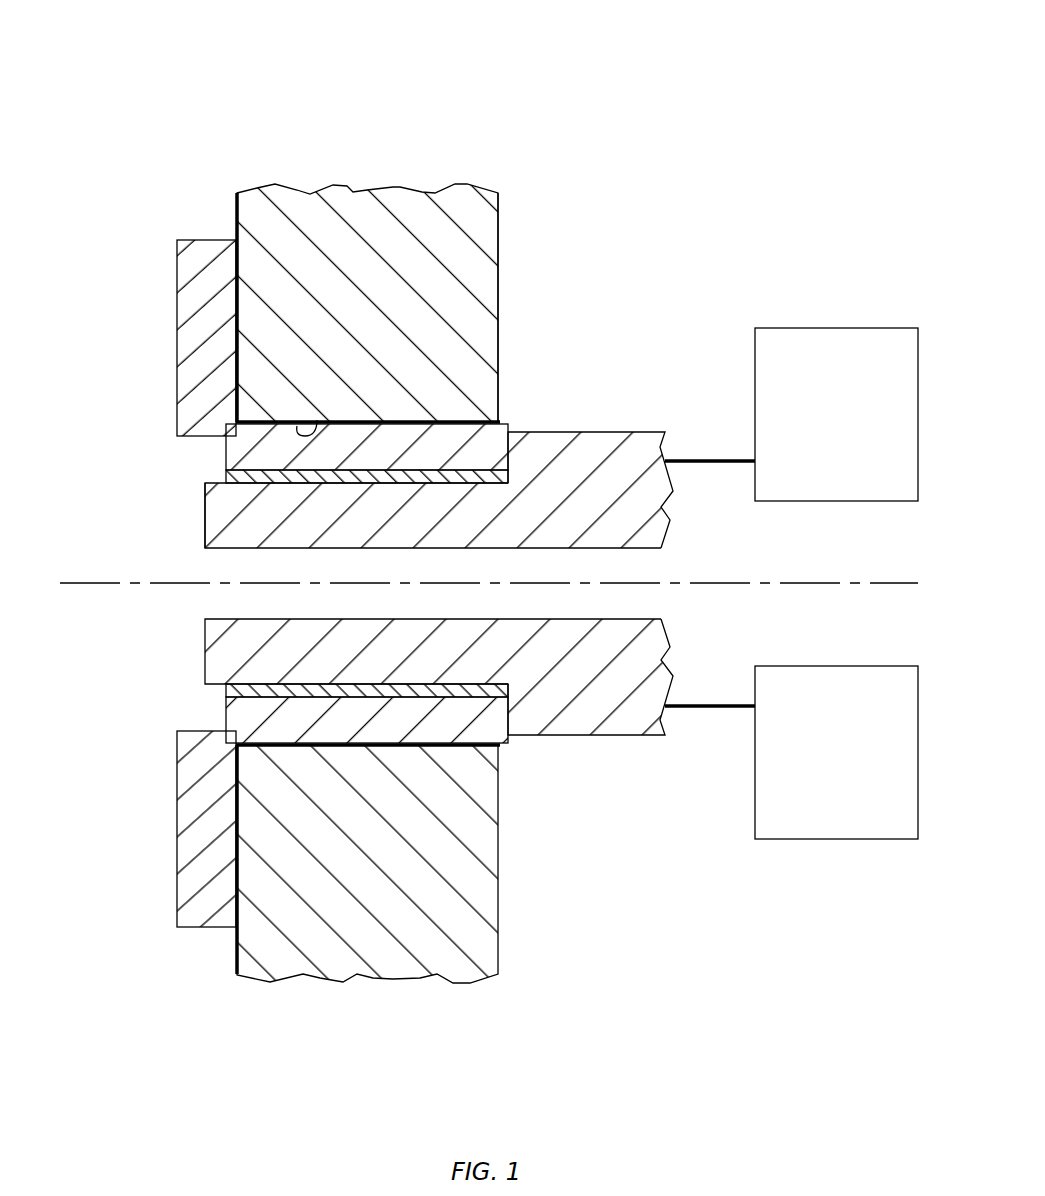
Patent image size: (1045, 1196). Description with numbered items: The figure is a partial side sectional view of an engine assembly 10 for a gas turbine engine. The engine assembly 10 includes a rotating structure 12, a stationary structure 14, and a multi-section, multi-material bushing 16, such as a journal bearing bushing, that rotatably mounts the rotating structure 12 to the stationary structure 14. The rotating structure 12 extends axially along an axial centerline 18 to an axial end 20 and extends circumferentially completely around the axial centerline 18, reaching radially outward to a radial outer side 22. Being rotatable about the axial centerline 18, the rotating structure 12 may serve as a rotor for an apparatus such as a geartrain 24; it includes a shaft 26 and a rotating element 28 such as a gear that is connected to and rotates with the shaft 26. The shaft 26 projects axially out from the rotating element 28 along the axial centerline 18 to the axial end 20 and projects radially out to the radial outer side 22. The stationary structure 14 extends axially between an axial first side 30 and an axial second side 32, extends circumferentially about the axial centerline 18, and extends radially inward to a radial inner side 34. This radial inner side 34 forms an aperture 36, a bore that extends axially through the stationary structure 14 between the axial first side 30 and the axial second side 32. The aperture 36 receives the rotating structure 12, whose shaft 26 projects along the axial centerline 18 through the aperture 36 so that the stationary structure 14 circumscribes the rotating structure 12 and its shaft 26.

The engine assembly 10 is at (202, 80).
The rotating structure 12 is at (190, 506).
The stationary structure 14 is at (458, 180).
The multi-section/multi-material bushing 16 is at (147, 384).
The axial centerline 18 is at (70, 583).
The axial end 20 is at (205, 525).
The radial outer side 22 is at (357, 482).
The geartrain 24 is at (731, 142).
The shaft 26 is at (593, 430).
The rotating element 28 is at (755, 372).
The axial first side 30 is at (237, 218).
The axial second side 32 is at (498, 215).
The radial inner side 34 is at (317, 420).
The aperture 36 is at (418, 420).